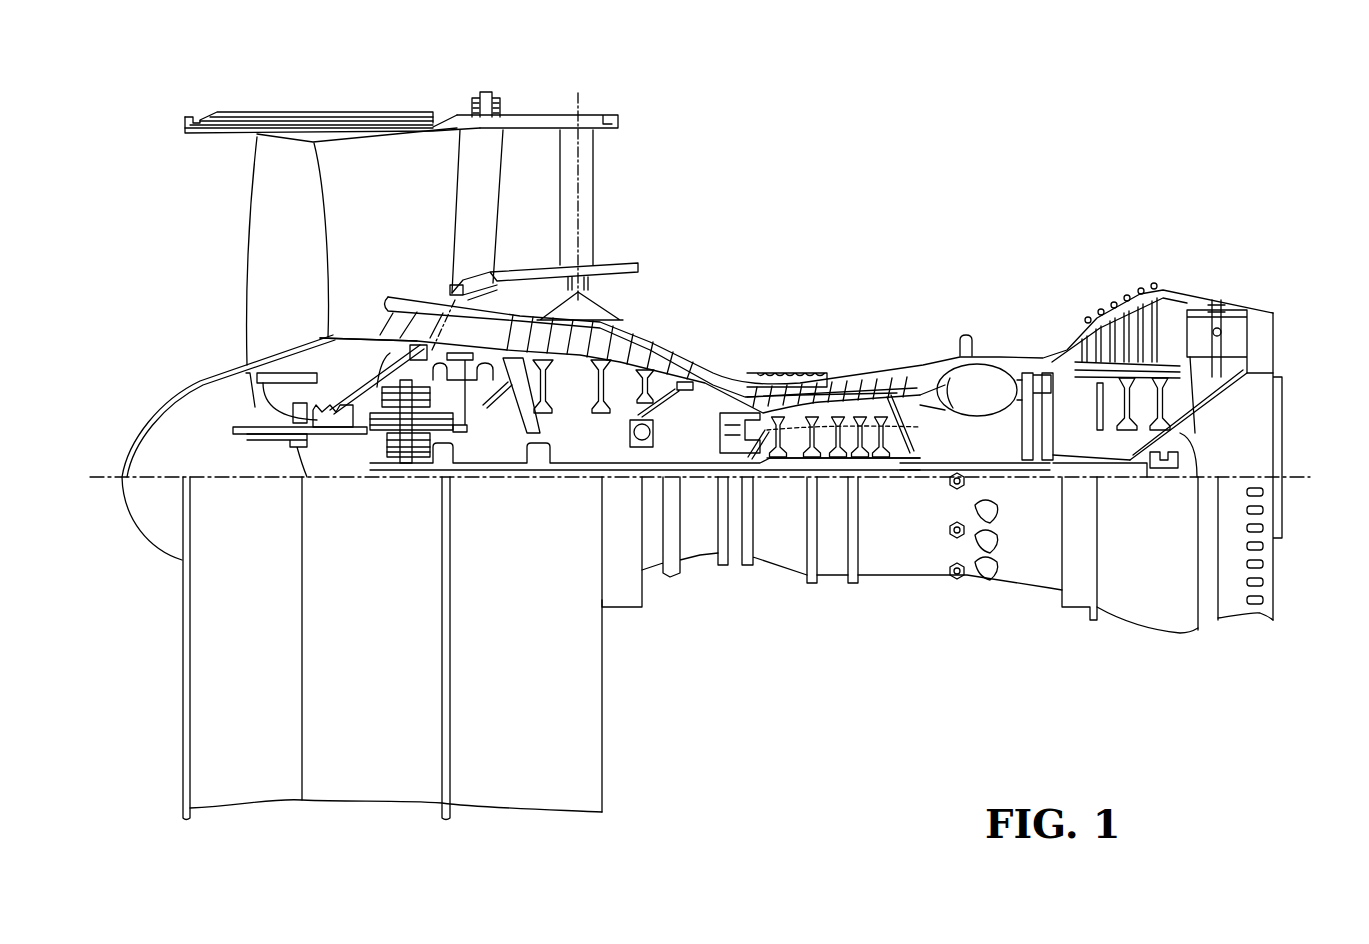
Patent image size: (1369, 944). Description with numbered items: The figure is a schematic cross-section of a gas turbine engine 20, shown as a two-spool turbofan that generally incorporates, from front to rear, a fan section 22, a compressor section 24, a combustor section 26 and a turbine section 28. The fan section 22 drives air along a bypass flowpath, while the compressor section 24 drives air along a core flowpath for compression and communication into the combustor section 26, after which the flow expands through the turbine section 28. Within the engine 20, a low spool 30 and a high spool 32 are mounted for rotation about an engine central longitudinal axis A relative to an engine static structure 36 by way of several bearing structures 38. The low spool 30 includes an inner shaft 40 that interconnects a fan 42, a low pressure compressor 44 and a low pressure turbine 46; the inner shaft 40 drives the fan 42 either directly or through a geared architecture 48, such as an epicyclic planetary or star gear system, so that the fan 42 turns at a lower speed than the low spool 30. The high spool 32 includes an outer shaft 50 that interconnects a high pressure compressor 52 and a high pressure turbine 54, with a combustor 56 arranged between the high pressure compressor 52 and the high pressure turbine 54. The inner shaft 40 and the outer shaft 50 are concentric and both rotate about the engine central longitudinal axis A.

The gas turbine engine 20 is at (1040, 186).
The fan section 22 is at (448, 93).
The compressor section 24 is at (862, 237).
The combustor section 26 is at (980, 237).
The turbine section 28 is at (1215, 237).
The low spool 30 is at (687, 433).
The high spool 32 is at (893, 433).
The engine static structure 36 is at (833, 580).
The bearing structures 38 is at (477, 547).
The inner shaft 40 is at (1005, 467).
The fan 42 is at (299, 276).
The low pressure compressor 44 is at (620, 338).
The low pressure turbine 46 is at (1133, 329).
The geared architecture 48 is at (408, 433).
The outer shaft 50 is at (1015, 467).
The high pressure compressor 52 is at (762, 395).
The high pressure turbine 54 is at (1043, 377).
The combustor 56 is at (978, 392).
The engine central longitudinal axis A is at (1296, 477).